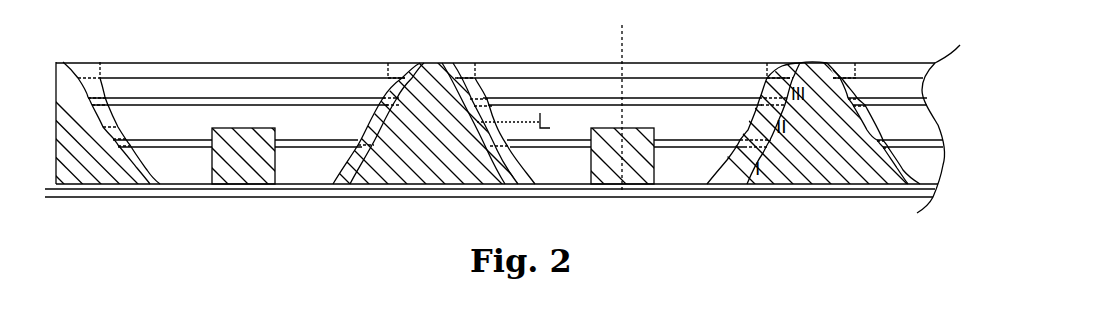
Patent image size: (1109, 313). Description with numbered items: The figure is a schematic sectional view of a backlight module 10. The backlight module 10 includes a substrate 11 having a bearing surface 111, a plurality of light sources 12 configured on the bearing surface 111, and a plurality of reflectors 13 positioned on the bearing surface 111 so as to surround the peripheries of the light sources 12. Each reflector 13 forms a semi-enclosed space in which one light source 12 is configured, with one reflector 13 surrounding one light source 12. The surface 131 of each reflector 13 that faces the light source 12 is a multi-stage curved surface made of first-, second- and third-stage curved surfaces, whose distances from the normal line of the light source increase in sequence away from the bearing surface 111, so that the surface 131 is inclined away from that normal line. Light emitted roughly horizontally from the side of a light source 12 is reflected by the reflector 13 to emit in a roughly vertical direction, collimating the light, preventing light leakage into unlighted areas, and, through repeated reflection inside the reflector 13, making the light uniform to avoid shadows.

The backlight module 10 is at (502, 114).
The substrate 11 is at (98, 192).
The bearing surface 111 is at (163, 183).
The light source 12 is at (242, 178).
The reflector 13 is at (443, 172).
The surface facing the light source 131 is at (120, 129).